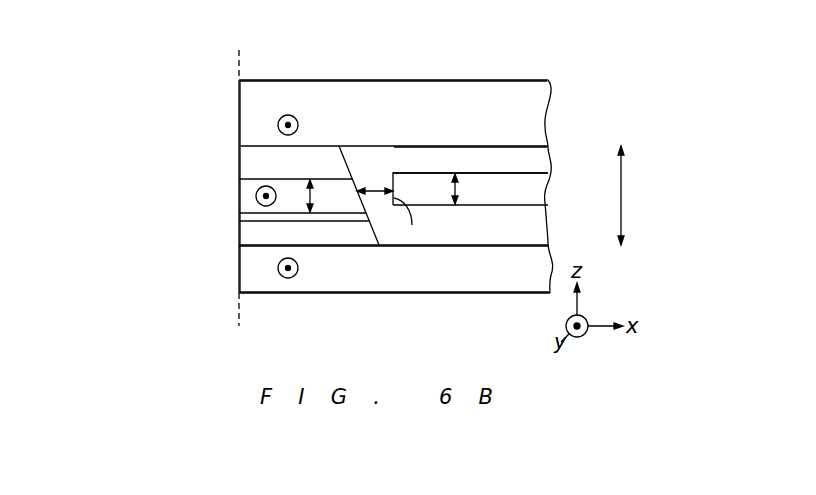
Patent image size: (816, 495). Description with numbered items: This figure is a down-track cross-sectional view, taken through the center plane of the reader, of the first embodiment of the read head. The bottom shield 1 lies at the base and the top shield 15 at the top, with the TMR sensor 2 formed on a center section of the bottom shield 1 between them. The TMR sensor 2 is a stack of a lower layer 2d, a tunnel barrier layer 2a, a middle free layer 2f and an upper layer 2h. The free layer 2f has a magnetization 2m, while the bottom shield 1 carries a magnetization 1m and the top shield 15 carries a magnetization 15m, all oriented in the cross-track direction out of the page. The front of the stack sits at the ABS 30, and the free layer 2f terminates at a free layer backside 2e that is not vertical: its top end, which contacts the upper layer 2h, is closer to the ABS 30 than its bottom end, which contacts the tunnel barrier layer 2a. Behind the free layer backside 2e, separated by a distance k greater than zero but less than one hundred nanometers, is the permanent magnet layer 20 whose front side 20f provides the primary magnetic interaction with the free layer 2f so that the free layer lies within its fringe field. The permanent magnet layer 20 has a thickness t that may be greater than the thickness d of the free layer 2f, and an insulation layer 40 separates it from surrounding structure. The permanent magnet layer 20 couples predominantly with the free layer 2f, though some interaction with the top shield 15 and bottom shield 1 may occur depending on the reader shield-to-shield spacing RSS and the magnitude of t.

The ABS 30 is at (240, 191).
The top shield 15 is at (251, 101).
The magnetization in the top shield 15m is at (313, 127).
The TMR sensor 2 is at (173, 147).
The upper layer 2h is at (250, 161).
The free layer 2f is at (250, 196).
The tunnel barrier layer 2a is at (250, 216).
The lower layer 2d is at (250, 240).
The bottom shield 1 is at (251, 266).
The magnetization of the free layer 2m is at (283, 198).
The magnetization in the bottom shield 1m is at (306, 270).
The insulation layer 40 is at (532, 157).
The permanent magnet layer 20 is at (532, 186).
The free layer backside 2e is at (355, 186).
The permanent magnet layer front side 20f is at (412, 225).
The thickness of the free layer d is at (320, 196).
The distance between free layer backside and PM layer k is at (375, 181).
The thickness of the permanent magnet layer t is at (462, 190).
The reader shield-to-shield spacing RSS is at (642, 195).